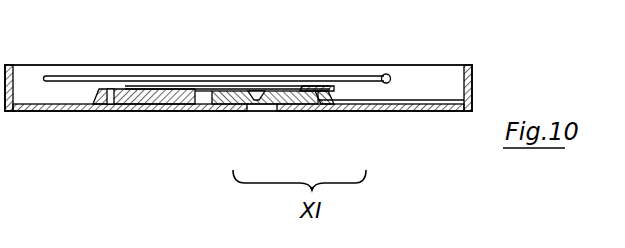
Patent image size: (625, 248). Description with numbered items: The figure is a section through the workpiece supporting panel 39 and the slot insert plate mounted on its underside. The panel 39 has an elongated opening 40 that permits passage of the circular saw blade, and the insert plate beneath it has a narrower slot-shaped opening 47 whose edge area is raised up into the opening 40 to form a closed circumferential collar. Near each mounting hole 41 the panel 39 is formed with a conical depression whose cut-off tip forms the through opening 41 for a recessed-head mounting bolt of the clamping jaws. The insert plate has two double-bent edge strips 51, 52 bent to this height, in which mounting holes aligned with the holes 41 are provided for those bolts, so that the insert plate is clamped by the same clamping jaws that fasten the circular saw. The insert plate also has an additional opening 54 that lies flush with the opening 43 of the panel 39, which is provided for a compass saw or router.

The workpiece supporting panel 39 is at (410, 112).
The elongated opening 40 is at (257, 113).
The mounting holes 41 is at (323, 112).
The opening 43 is at (198, 112).
The slot-shaped opening 47 is at (260, 92).
The edge strip 51 is at (97, 90).
The edge strip 52 is at (336, 90).
The additional opening 54 is at (213, 90).